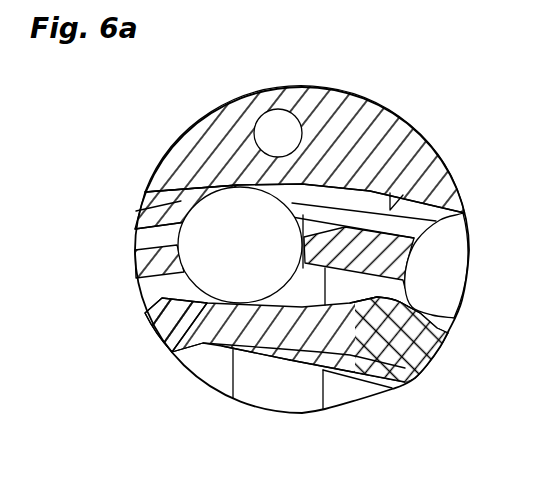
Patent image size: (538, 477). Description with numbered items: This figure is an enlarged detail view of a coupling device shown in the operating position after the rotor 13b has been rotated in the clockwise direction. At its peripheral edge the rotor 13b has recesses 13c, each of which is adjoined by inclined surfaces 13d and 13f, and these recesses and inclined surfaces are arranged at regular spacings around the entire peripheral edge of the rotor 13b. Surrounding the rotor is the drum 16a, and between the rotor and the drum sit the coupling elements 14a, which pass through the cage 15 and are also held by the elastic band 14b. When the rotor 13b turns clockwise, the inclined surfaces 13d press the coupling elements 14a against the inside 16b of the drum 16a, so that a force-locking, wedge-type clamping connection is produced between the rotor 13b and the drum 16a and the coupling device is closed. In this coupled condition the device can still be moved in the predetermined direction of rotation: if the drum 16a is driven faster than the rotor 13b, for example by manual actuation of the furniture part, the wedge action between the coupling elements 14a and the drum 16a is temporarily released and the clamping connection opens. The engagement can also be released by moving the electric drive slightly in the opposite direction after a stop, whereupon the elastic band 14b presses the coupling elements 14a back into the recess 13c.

The rotor 13b is at (405, 368).
The recess 13c is at (285, 313).
The inclined surface 13d is at (203, 305).
The inclined surface 13f is at (371, 302).
The coupling element 14a is at (210, 218).
The elastic band 14b is at (143, 230).
The cage 15 is at (138, 280).
The drum 16a is at (386, 132).
The inside of the drum 16b is at (440, 176).